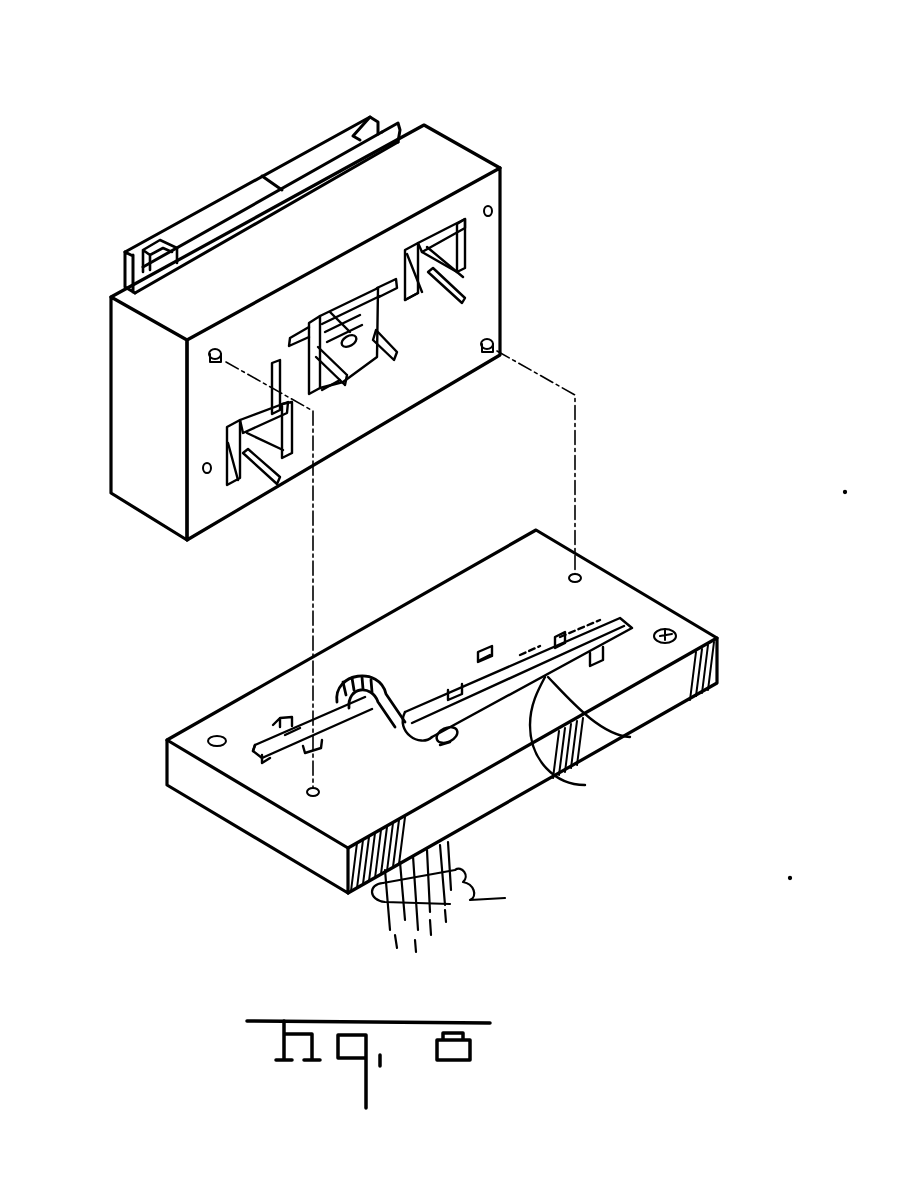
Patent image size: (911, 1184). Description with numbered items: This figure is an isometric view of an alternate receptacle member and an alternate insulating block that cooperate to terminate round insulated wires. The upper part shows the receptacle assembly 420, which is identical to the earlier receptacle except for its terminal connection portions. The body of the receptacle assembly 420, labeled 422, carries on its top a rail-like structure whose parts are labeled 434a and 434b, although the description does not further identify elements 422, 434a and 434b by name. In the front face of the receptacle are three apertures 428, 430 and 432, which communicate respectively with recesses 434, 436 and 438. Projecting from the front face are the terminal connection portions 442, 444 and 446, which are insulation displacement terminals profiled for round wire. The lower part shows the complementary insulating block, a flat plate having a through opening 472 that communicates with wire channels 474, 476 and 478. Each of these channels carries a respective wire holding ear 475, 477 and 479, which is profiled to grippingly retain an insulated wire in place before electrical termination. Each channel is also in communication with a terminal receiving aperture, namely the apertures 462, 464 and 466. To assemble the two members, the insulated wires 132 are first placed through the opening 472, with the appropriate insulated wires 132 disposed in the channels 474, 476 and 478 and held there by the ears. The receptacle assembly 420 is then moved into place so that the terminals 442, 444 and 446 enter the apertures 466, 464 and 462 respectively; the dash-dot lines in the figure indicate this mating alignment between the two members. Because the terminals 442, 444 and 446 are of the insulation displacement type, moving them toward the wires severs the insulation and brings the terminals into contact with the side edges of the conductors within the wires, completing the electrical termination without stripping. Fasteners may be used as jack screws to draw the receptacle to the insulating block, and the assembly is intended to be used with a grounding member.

The receptacle assembly 420 is at (485, 99).
The connector housing block 422 is at (498, 172).
The rail clip 434a is at (193, 215).
The rail 434b is at (327, 143).
The terminal connection portion 444 is at (367, 308).
The aperture 432 is at (466, 226).
The aperture 430 is at (318, 317).
The terminal connection portion 446 is at (464, 302).
The aperture 428 is at (283, 386).
The recess 438 is at (417, 290).
The recess 434 is at (230, 443).
The recess 436 is at (313, 392).
The terminal connection portion 442 is at (258, 498).
The terminal receiving aperture 464 is at (455, 655).
The terminal receiving aperture 462 is at (560, 637).
The wire holding ear 477 is at (408, 688).
The wire channel 478 is at (300, 727).
The wire channel 476 is at (493, 657).
The terminal receiving aperture 466 is at (262, 737).
The wire holding ear 475 is at (630, 737).
The wire holding ear 479 is at (332, 727).
The wire channel 474 is at (585, 785).
The through opening 472 is at (460, 742).
The insulated wires 132 is at (466, 897).